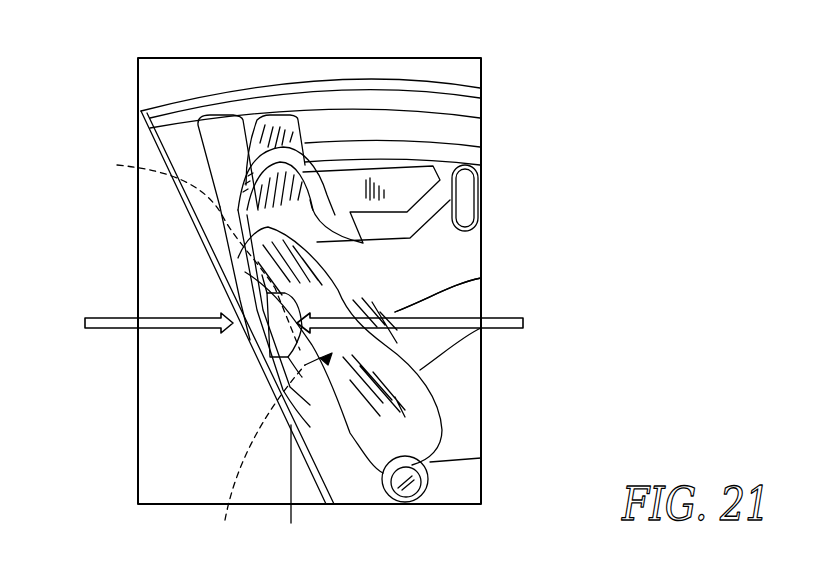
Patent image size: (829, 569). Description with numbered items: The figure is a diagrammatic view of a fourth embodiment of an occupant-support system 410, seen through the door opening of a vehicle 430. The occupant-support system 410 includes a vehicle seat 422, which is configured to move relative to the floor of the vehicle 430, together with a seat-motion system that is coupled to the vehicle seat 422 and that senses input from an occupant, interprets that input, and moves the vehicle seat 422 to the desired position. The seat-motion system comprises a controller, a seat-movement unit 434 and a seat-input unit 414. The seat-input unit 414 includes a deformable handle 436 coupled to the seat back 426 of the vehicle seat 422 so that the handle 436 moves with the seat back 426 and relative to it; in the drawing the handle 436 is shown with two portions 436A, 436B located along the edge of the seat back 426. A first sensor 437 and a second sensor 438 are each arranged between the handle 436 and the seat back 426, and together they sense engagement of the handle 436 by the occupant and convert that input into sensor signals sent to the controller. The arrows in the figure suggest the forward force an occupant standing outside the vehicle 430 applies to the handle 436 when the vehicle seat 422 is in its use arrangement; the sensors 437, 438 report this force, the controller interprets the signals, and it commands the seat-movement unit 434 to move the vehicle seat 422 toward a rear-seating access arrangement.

The occupant-support system 410 is at (135, 50).
The vehicle 430 is at (236, 80).
The seat-input unit 414 is at (262, 326).
The vehicle seat 422 is at (424, 410).
The seat back 426 is at (382, 300).
The handle 436 is at (256, 334).
The bracket lower portion 436A is at (290, 353).
The bracket upper portion 436B is at (250, 302).
The second sensor 438 is at (183, 250).
The first sensor 437 is at (267, 453).
The seat-movement unit 434 is at (293, 494).